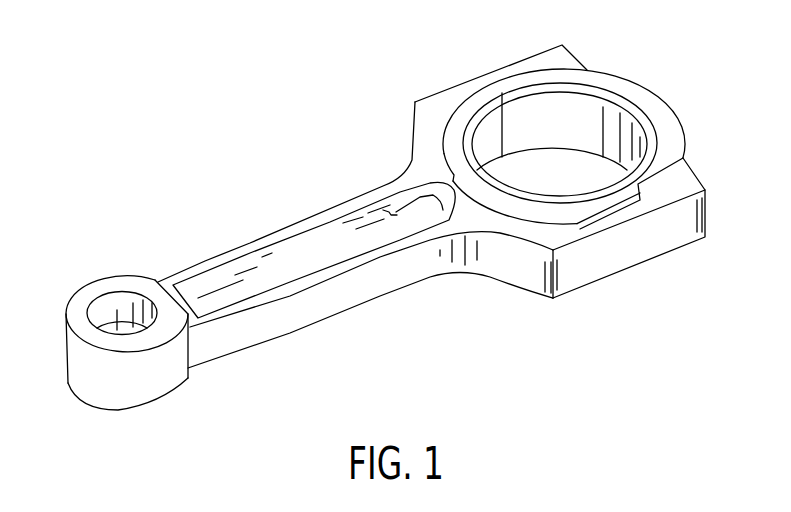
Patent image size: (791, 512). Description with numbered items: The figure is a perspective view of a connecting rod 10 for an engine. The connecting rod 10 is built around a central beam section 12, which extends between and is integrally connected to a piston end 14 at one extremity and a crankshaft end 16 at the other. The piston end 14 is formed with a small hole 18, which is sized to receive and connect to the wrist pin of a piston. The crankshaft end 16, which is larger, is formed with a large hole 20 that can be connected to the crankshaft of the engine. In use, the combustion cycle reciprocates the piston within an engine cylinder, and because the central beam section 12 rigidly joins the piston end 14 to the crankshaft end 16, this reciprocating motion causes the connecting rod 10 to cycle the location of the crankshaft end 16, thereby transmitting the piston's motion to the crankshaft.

The connecting rod 10 is at (379, 234).
The central beam section 12 is at (298, 226).
The piston end 14 is at (96, 352).
The crankshaft end 16 is at (585, 158).
The small hole 18 is at (130, 327).
The large hole 20 is at (566, 97).